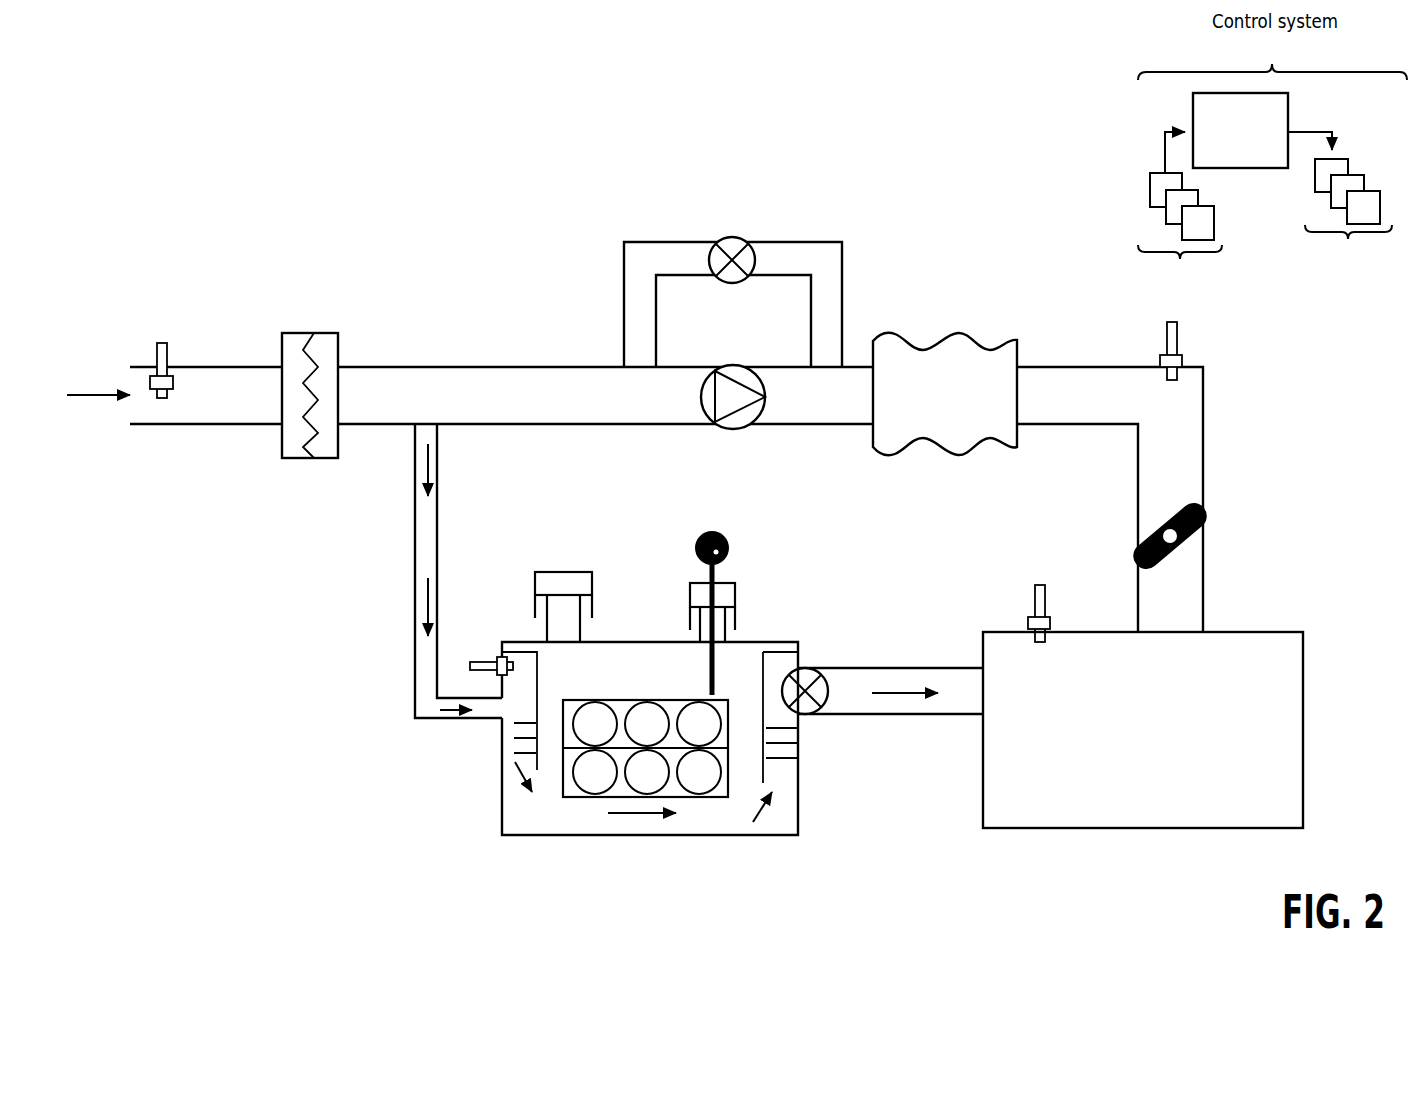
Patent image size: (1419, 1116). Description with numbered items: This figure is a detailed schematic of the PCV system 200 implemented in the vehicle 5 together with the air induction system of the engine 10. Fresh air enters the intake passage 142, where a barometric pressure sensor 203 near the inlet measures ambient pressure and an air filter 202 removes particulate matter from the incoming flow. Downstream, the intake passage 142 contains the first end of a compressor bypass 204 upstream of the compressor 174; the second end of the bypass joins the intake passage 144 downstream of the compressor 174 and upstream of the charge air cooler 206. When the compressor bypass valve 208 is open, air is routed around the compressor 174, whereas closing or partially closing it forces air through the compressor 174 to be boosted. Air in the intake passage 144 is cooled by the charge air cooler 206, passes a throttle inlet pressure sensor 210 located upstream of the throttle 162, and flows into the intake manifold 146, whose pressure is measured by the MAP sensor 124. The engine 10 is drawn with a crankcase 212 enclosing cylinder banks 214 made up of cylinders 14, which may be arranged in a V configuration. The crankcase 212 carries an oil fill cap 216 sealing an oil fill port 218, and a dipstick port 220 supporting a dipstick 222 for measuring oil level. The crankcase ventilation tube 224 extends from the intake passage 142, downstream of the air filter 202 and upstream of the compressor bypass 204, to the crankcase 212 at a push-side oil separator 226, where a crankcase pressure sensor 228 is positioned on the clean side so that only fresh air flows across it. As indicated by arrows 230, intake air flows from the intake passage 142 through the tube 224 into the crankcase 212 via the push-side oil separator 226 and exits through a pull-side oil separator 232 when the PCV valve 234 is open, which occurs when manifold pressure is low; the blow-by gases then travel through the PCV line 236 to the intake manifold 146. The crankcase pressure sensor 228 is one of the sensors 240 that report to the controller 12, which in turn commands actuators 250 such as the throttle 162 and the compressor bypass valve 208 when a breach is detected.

The vehicle 5 is at (258, 172).
The internal combustion engine 10 is at (438, 841).
The controller 12 is at (1240, 130).
The cylinder 14 is at (603, 733).
The MAP sensor 124 is at (1035, 585).
The intake passage 142 is at (240, 408).
The intake passage 144 is at (839, 408).
The intake manifold 146 is at (1155, 742).
The throttle 162 is at (1188, 505).
The compressor 174 is at (733, 430).
The PCV system 200 is at (366, 640).
The air filter 202 is at (300, 333).
The barometric pressure sensor 203 is at (157, 362).
The compressor bypass 204 is at (600, 242).
The charge air cooler 206 is at (954, 408).
The compressor bypass valve 208 is at (742, 240).
The throttle inlet pressure sensor 210 is at (1160, 360).
The crankcase 212 is at (662, 835).
The cylinder banks 214 is at (645, 726).
The oil fill cap 216 is at (592, 586).
The oil fill port 218 is at (580, 630).
The dipstick port 220 is at (722, 637).
The dipstick 222 is at (716, 578).
The crankcase ventilation tube 224 is at (413, 550).
The push-side oil separator 226 is at (500, 730).
The crankcase pressure sensor 228 is at (472, 662).
The arrows 230 is at (108, 390).
The pull-side oil separator 232 is at (762, 660).
The PCV valve 234 is at (828, 683).
The PCV line 236 is at (948, 666).
The sensors 240 is at (1180, 219).
The actuators 250 is at (1340, 210).